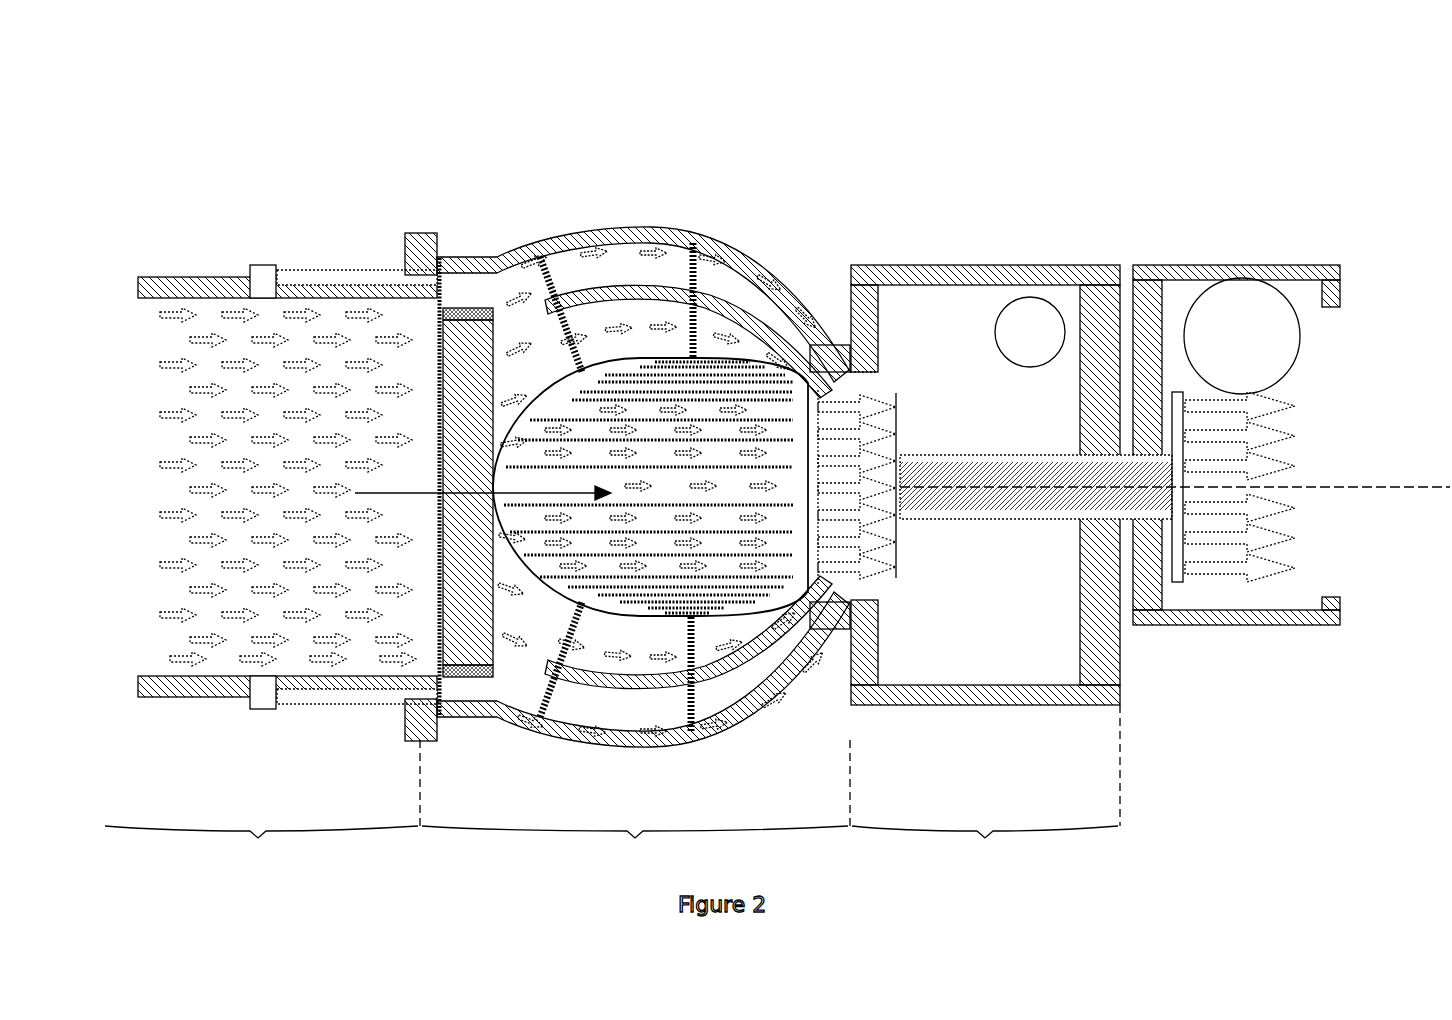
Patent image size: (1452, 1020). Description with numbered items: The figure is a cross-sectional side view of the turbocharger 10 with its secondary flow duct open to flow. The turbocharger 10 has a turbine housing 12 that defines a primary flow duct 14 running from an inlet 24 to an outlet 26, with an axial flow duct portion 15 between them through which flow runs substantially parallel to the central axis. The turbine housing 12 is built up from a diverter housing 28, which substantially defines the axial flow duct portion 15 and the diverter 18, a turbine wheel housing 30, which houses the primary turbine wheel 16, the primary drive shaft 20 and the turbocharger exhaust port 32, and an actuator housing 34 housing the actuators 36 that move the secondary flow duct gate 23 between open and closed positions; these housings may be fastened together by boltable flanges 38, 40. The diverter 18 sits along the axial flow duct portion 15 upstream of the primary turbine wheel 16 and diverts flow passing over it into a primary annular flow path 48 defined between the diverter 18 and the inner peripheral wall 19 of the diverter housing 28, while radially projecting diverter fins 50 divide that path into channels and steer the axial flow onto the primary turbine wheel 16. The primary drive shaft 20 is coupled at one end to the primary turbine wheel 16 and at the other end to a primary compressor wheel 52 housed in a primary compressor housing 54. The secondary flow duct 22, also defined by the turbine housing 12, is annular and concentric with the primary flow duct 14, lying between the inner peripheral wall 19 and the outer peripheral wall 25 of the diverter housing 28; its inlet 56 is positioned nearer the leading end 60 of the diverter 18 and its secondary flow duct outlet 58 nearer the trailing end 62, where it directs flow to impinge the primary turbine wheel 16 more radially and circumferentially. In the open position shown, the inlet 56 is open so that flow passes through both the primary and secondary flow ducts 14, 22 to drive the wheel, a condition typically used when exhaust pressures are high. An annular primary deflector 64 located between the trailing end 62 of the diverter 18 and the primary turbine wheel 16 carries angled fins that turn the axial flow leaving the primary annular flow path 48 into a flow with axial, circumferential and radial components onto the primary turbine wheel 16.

The turbocharger 10 is at (1172, 122).
The turbine housing 12 is at (640, 232).
The primary flow duct 14 is at (441, 690).
The axial flow duct portion 15 is at (493, 491).
The primary turbine wheel 16 is at (882, 548).
The diverter 18 is at (737, 345).
The inner peripheral wall 19 is at (578, 300).
The primary drive shaft 20 is at (1062, 520).
The secondary flow duct 22 is at (690, 290).
The secondary flow duct gate 23 is at (482, 672).
The inlet 24 is at (432, 300).
The outer peripheral wall 25 is at (668, 282).
The outlet 26 is at (883, 368).
The diverter housing 28 is at (636, 803).
The turbine wheel housing 30 is at (986, 786).
The turbocharger exhaust port 32 is at (1047, 322).
The actuator housing 34 is at (262, 803).
The actuator 36 is at (270, 708).
The boltable flange 38 is at (402, 738).
The boltable flange 40 is at (880, 634).
The primary annular flow path 48 is at (565, 330).
The diverter fin 50 is at (560, 708).
The primary compressor wheel 52 is at (1230, 600).
The primary compressor housing 54 is at (1296, 626).
The inlet 56 is at (486, 290).
The secondary flow duct outlet 58 is at (858, 372).
The leading end 60 is at (438, 430).
The trailing end 62 is at (826, 424).
The primary deflector 64 is at (858, 350).